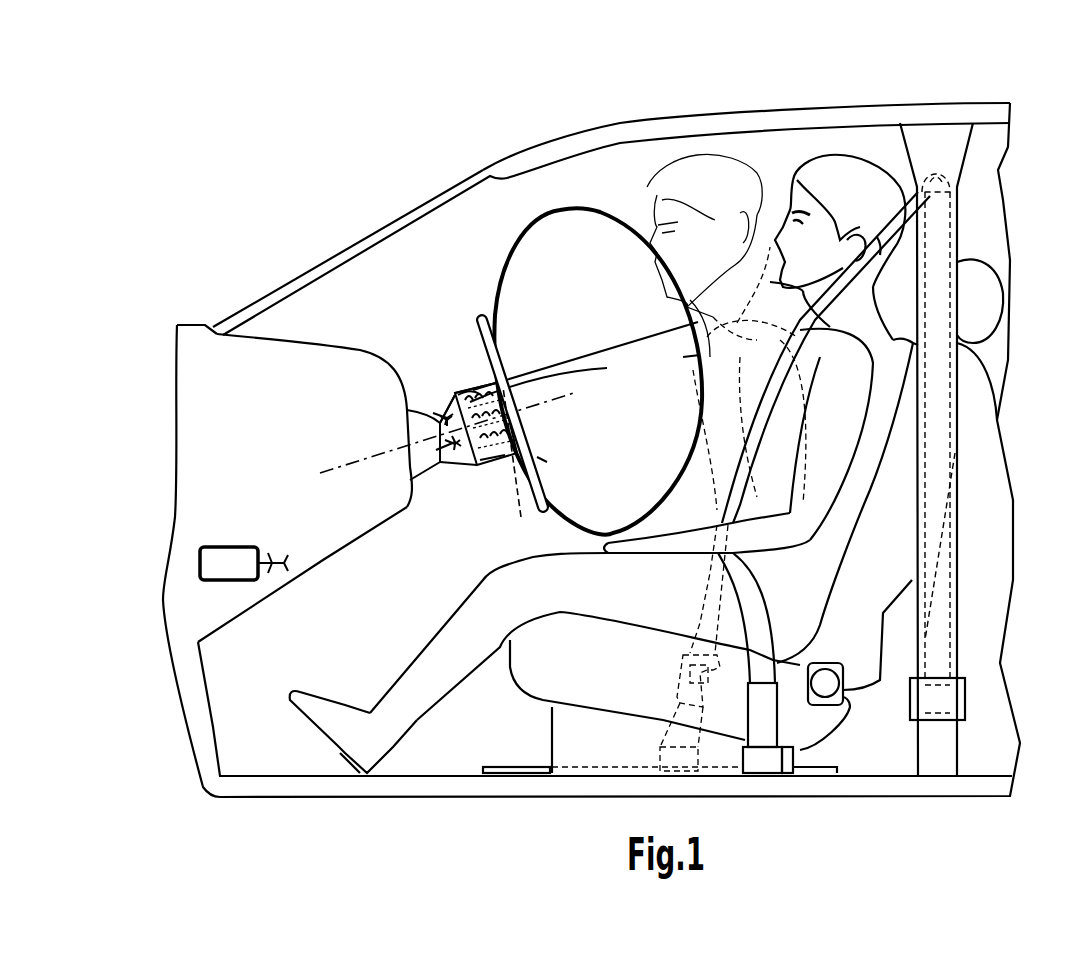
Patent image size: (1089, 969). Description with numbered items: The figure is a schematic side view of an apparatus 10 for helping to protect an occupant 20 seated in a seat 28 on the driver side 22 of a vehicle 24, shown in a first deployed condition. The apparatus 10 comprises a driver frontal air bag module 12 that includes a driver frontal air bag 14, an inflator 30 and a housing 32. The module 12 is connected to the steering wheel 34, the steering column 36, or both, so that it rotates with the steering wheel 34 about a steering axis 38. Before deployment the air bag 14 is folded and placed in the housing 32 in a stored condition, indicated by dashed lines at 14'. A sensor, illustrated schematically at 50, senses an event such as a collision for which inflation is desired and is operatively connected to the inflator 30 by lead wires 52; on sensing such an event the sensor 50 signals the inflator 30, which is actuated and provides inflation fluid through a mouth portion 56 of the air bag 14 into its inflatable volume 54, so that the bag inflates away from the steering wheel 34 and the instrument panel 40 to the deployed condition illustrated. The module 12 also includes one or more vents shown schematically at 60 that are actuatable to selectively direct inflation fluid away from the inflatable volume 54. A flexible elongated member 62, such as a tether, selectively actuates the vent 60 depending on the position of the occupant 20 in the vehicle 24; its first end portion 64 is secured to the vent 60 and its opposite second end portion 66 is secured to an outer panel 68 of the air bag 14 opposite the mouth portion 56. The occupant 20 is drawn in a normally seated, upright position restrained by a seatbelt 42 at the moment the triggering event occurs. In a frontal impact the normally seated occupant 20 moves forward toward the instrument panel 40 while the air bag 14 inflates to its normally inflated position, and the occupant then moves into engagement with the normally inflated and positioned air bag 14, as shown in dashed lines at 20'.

The apparatus 10 is at (420, 315).
The driver frontal air bag module 12 is at (470, 360).
The driver frontal air bag 14 is at (683, 251).
The stored condition of the air bag 14' is at (525, 463).
The occupant 20 is at (598, 417).
The occupant in engagement with the inflated air bag 20' is at (726, 418).
The driver side 22 is at (619, 105).
The vehicle 24 is at (350, 183).
The seat 28 is at (887, 503).
The inflator 30 is at (477, 443).
The housing 32 is at (500, 457).
The steering wheel 34 is at (480, 320).
The steering column 36 is at (425, 470).
The steering axis 38 is at (360, 460).
The instrument panel 40 is at (333, 362).
The seatbelt 42 is at (898, 233).
The sensor 50 is at (225, 560).
The lead wires 52 is at (460, 440).
The inflatable volume 54 is at (594, 243).
The mouth portion 56 is at (537, 457).
The vent 60 is at (579, 371).
The flexible elongated member 62 is at (588, 352).
The first end portion 64 is at (468, 393).
The second end portion 66 is at (688, 327).
The outer panel 68 is at (683, 357).